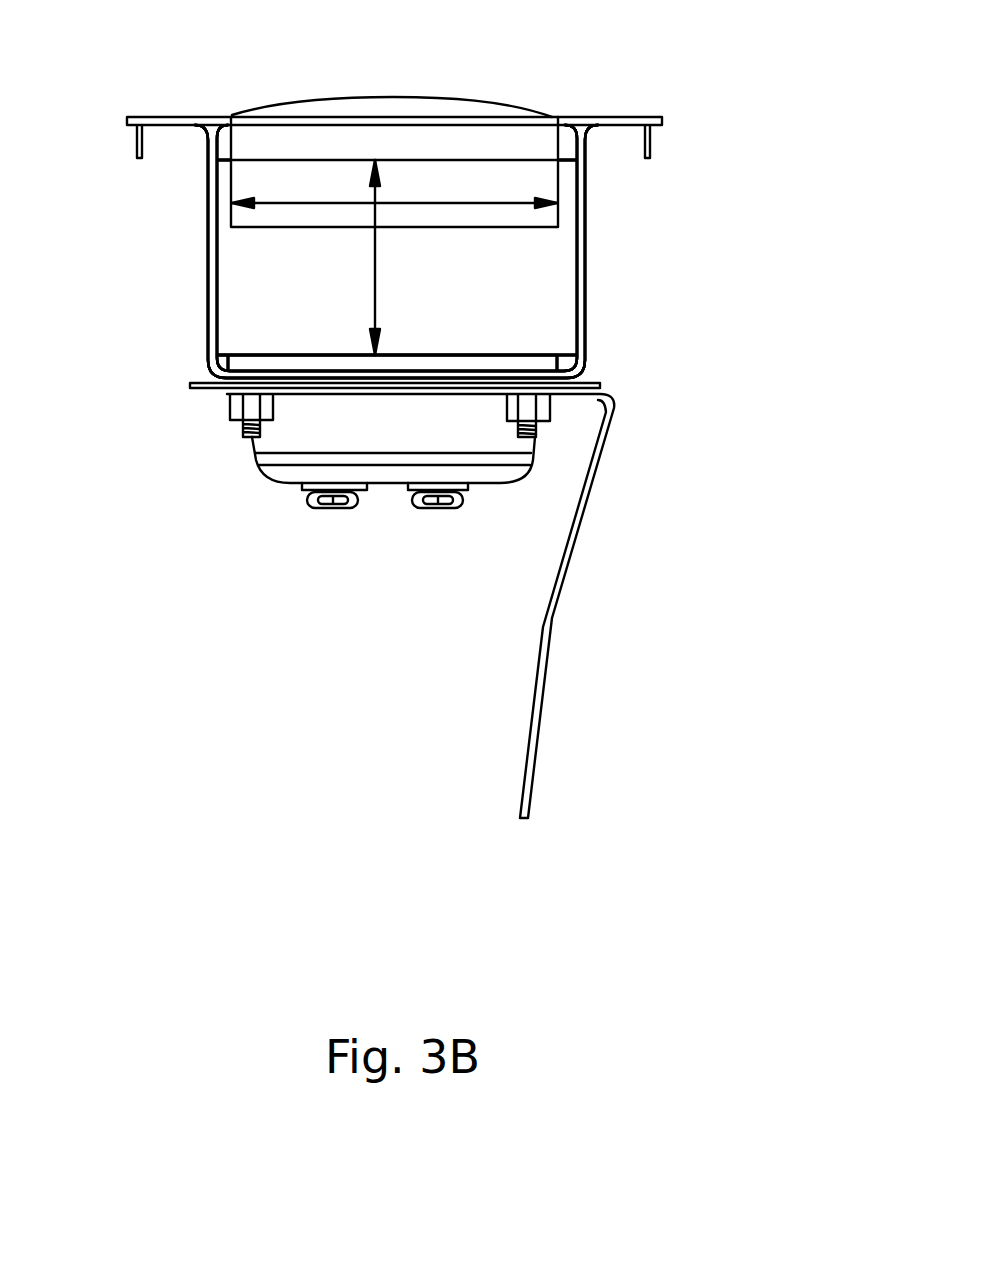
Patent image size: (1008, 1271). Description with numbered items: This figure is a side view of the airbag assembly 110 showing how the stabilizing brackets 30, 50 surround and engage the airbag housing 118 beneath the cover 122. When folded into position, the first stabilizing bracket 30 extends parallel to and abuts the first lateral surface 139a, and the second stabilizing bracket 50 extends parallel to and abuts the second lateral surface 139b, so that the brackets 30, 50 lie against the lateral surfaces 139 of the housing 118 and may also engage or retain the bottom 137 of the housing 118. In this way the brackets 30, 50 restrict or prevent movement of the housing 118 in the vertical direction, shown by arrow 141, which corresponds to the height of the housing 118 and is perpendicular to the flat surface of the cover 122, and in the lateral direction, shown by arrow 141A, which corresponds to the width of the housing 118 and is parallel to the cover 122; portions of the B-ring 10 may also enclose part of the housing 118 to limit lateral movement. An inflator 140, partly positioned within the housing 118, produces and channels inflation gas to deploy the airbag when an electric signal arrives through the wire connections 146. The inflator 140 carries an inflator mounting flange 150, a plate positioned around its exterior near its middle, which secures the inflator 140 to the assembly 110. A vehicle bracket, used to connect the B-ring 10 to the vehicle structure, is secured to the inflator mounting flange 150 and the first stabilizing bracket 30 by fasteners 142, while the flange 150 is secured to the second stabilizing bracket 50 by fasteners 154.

The B-ring 10 is at (665, 119).
The first stabilizing bracket 30 is at (587, 232).
The second stabilizing bracket 50 is at (208, 253).
The airbag assembly 110 is at (612, 187).
The airbag housing 118 is at (513, 178).
The cover 122 is at (368, 80).
The bottom 137 is at (292, 372).
The lateral surfaces 139 is at (217, 298).
The first lateral surface 139a is at (574, 328).
The second lateral surface 139b is at (217, 251).
The inflator 140 is at (302, 437).
The arrow 141 is at (378, 262).
The arrow 141A is at (398, 201).
The fasteners 142 is at (544, 413).
The wire connections 146 is at (412, 506).
The inflator mounting flange 150 is at (592, 381).
The fasteners 154 is at (248, 407).